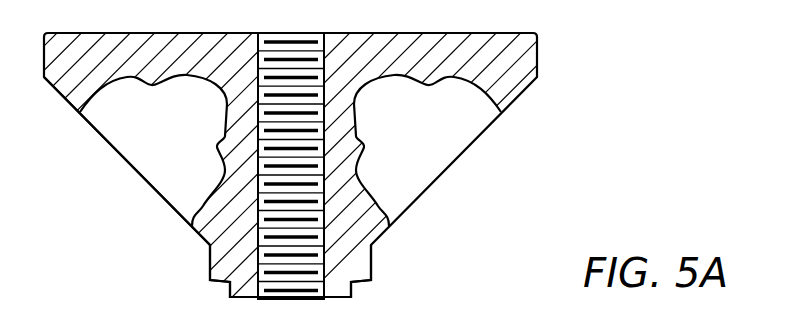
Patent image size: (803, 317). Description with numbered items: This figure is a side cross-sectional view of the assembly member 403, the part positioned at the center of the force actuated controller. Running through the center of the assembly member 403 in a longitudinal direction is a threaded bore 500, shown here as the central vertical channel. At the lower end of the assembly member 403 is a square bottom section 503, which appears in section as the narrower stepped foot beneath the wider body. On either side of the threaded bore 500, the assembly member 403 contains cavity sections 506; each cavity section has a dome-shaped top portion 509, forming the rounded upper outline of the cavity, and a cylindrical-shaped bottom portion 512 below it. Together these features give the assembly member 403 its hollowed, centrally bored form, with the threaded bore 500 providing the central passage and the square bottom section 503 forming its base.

The assembly member 403 is at (307, 166).
The threaded bore 500 is at (314, 149).
The square bottom section 503 is at (327, 274).
The cavity sections 506 is at (439, 150).
The dome-shaped top portions 509 is at (136, 150).
The cylindrical-shaped bottom portions 512 is at (127, 161).